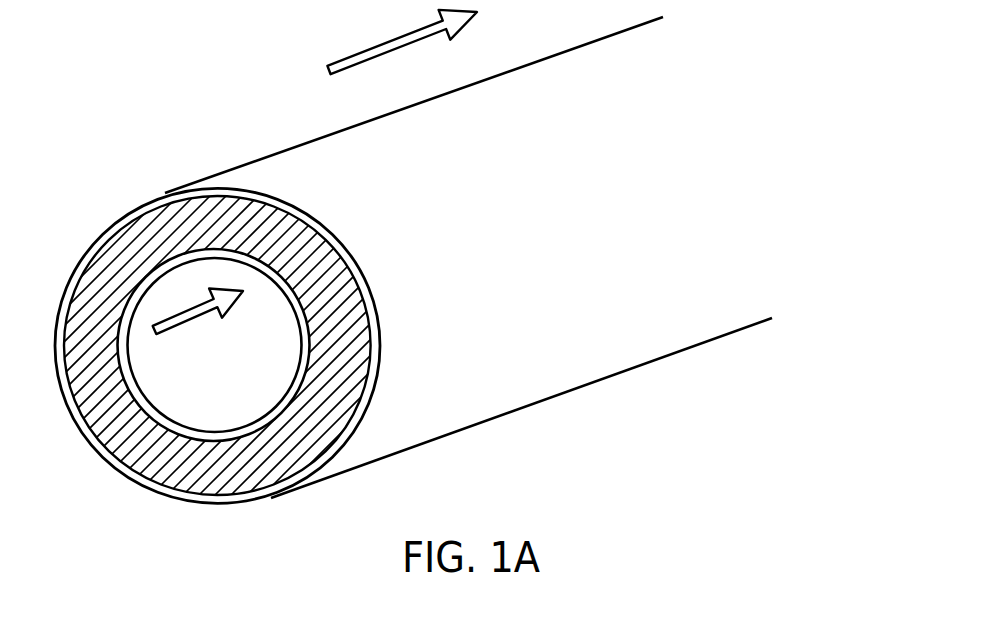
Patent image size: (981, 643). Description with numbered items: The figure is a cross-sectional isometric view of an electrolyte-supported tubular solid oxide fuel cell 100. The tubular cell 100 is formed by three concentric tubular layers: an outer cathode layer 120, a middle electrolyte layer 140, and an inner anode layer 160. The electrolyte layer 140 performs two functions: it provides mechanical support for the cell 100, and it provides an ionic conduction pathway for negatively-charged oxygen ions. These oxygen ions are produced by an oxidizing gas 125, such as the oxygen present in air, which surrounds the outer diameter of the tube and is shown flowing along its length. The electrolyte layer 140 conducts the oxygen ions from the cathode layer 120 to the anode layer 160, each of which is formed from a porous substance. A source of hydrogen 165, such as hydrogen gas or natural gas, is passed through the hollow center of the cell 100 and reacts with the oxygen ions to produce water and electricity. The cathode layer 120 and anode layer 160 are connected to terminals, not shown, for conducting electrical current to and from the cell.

The electrolyte-supported tubular solid oxide fuel cell 100 is at (545, 425).
The cathode layer 120 is at (193, 495).
The electrolyte layer 140 is at (238, 480).
The anode layer 160 is at (297, 382).
The source of hydrogen 165 is at (231, 405).
The oxidizing gas 125 is at (283, 133).